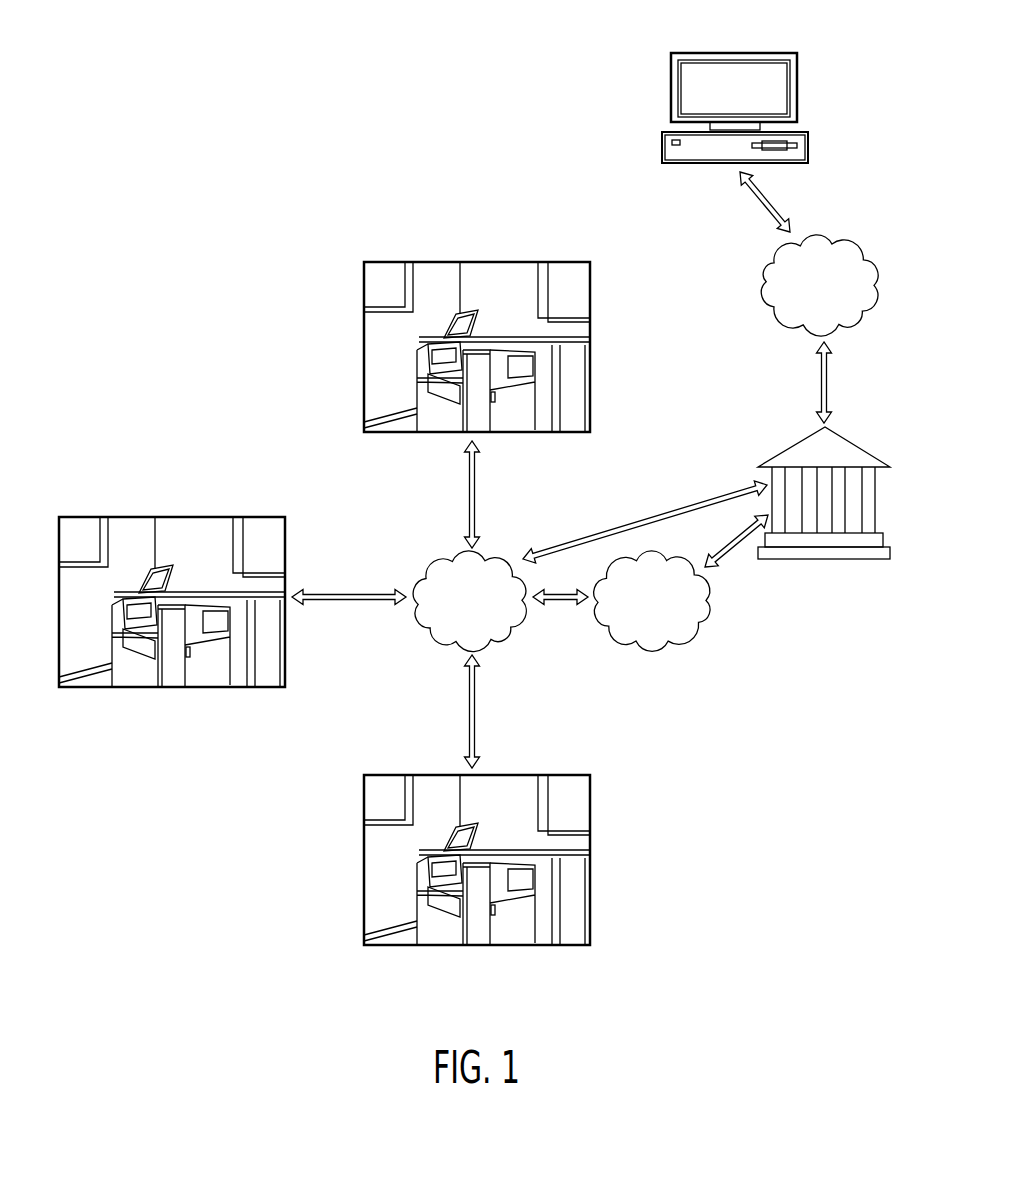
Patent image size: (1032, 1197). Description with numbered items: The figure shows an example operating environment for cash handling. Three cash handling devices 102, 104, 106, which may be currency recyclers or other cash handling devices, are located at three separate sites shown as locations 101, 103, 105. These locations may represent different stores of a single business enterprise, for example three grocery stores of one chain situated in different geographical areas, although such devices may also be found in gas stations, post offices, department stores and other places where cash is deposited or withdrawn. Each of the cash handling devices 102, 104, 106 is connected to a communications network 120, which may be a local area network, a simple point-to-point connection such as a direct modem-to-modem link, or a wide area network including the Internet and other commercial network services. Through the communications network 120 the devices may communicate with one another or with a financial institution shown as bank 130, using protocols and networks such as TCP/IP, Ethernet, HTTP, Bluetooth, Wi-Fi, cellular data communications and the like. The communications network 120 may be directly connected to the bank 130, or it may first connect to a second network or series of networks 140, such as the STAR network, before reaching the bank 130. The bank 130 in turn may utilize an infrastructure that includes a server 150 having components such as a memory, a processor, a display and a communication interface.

The location 101 is at (477, 347).
The cash handling device 102 is at (471, 394).
The location 103 is at (172, 602).
The cash handling device 104 is at (171, 648).
The location 105 is at (445, 887).
The cash handling device 106 is at (473, 911).
The communications network 120 is at (511, 639).
The bank 130 is at (796, 442).
The second network or series of networks 140 is at (655, 650).
The server 150 is at (768, 53).